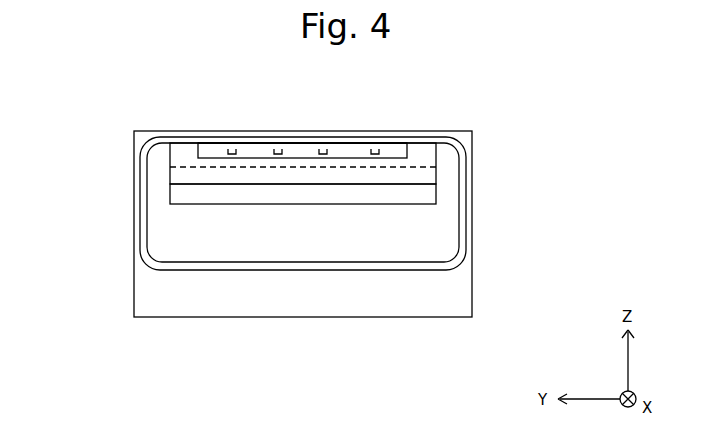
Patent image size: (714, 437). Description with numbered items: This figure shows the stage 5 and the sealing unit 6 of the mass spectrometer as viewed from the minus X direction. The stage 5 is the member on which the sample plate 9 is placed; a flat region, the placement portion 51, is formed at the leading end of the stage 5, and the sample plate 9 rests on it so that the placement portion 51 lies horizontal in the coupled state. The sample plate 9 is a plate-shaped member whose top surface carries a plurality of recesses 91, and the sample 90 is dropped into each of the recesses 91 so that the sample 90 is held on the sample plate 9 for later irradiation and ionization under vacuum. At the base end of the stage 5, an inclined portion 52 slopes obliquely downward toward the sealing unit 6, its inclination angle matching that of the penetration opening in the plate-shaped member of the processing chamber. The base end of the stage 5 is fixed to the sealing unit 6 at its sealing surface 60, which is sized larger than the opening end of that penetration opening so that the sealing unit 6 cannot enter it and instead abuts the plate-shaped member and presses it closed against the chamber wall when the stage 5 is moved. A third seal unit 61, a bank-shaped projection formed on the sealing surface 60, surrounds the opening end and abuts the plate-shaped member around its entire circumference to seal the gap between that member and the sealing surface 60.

The stage 5 is at (83, 162).
The placement portion 51 is at (170, 172).
The inclined portion 52 is at (170, 194).
The sealing unit 6 is at (133, 277).
The sealing surface 60 is at (189, 299).
The third seal unit 61 is at (458, 265).
The sample plate 9 is at (396, 151).
The sample 90 is at (233, 149).
The recesses 91 is at (224, 144).